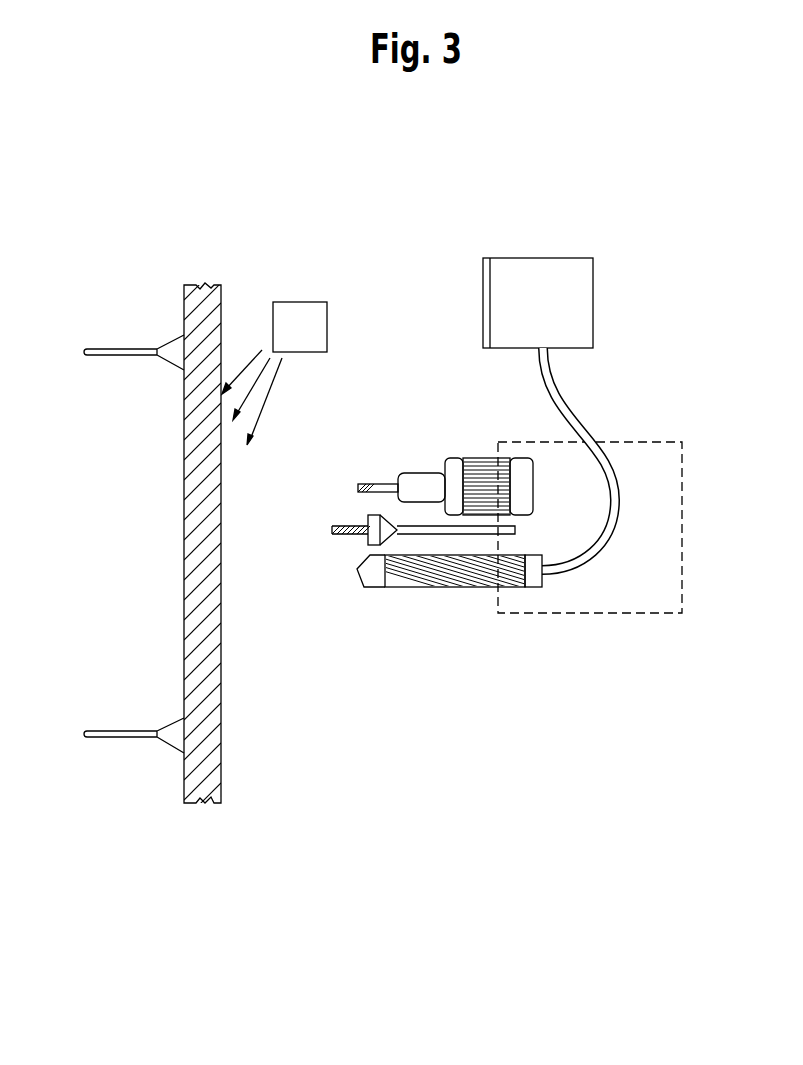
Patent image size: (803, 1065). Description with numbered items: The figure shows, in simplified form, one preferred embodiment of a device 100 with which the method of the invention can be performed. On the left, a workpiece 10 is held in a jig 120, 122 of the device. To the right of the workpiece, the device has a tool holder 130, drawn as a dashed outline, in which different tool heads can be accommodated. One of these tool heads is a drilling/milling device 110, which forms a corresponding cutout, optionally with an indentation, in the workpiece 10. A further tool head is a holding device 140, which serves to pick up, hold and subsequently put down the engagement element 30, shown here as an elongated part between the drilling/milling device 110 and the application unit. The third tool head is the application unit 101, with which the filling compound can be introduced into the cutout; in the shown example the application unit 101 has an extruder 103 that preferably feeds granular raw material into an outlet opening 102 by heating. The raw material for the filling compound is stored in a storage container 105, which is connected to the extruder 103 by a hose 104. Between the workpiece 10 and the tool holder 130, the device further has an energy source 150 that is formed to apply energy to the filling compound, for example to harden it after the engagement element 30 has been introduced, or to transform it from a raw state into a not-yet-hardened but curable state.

The workpiece 10 is at (195, 266).
The engagement element 30 is at (340, 526).
The injection system 100 is at (105, 917).
The application unit 101 is at (449, 607).
The outlet opening 102 is at (355, 572).
The extruder 103 is at (507, 588).
The hose 104 is at (621, 498).
The storage container 105 is at (553, 272).
The drilling/milling device 110 is at (420, 471).
The jig 120 is at (131, 544).
The injection nozzle 122 is at (115, 731).
The tool holder 130 is at (653, 440).
The holding device 140 is at (410, 536).
The energy source 150 is at (303, 313).